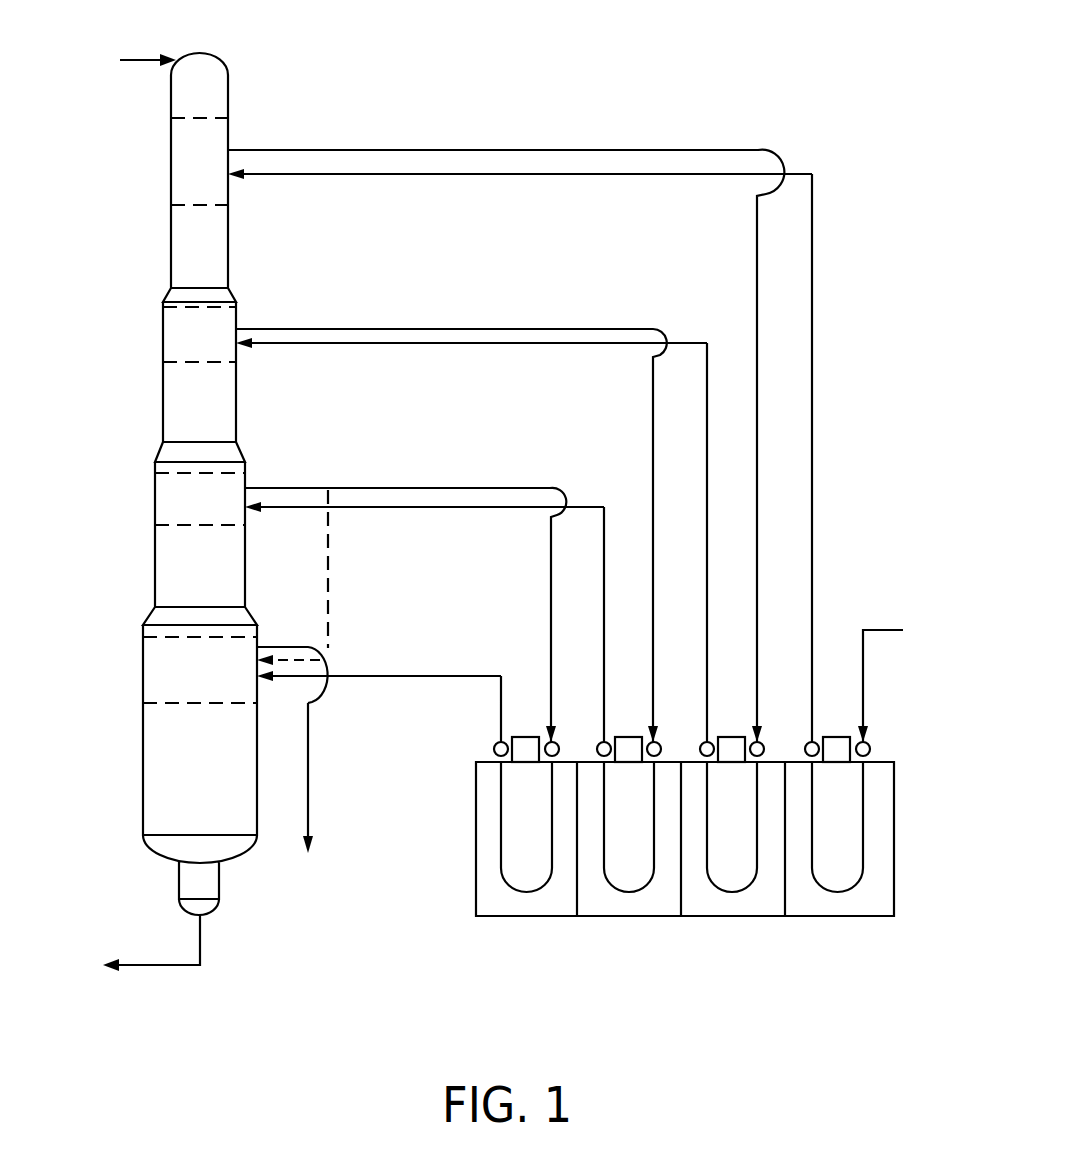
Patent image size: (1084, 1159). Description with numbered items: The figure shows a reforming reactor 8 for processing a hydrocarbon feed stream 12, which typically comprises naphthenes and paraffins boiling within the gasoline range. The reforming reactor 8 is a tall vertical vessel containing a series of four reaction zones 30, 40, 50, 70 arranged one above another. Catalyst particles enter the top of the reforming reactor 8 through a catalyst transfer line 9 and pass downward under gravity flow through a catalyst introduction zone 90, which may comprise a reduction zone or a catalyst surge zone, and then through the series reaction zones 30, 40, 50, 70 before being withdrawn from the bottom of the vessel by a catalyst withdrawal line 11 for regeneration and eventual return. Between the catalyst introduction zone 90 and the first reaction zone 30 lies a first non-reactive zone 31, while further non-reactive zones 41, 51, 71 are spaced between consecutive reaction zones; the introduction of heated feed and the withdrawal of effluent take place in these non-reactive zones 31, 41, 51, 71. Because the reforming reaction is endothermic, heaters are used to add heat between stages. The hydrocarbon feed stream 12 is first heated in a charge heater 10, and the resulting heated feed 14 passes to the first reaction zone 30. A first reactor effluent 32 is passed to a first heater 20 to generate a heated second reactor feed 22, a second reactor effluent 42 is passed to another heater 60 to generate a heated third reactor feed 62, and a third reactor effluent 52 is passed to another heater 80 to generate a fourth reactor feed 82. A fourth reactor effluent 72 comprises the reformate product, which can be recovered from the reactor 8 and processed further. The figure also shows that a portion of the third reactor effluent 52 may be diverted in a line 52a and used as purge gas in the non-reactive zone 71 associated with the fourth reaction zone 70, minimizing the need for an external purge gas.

The reforming reactor 8 is at (100, 110).
The catalyst transfer line 9 is at (143, 58).
The catalyst introduction zone 90 is at (229, 80).
The first non-reactive zone 31 is at (171, 158).
The first reaction zone 30 is at (171, 215).
The first reactor effluent 32 is at (490, 150).
The second non-reactive zone 41 is at (163, 323).
The second reaction zone 40 is at (163, 372).
The second reactor effluent 42 is at (302, 328).
The heated second reactor feed 22 is at (422, 345).
The heated feed 14 is at (812, 384).
The third non-reactive zone 51 is at (155, 490).
The third reaction zone 50 is at (155, 532).
The third reactor effluent 52 is at (308, 488).
The heated third reactor feed 62 is at (289, 508).
The line 52a is at (328, 594).
The fourth non-reactive zone 71 is at (143, 673).
The fourth reaction zone 70 is at (143, 728).
The fourth reactor feed 82 is at (382, 678).
The fourth reactor effluent 72 is at (308, 767).
The hydrocarbon feed stream 12 is at (883, 630).
The charge heater 10 is at (894, 838).
The heater 80 is at (476, 838).
The heater 60 is at (661, 918).
The first heater 20 is at (771, 918).
The catalyst withdrawal line 11 is at (152, 966).